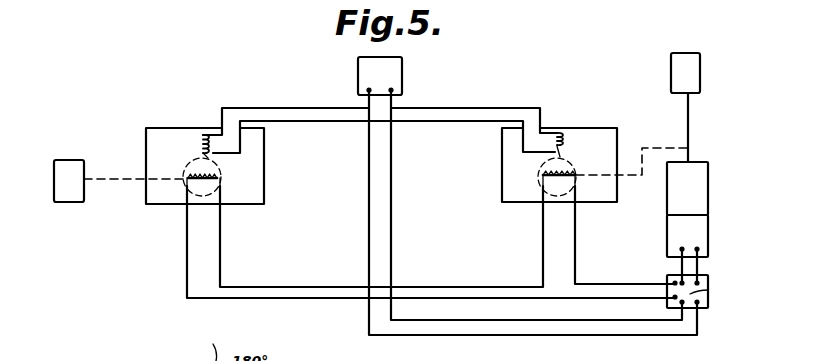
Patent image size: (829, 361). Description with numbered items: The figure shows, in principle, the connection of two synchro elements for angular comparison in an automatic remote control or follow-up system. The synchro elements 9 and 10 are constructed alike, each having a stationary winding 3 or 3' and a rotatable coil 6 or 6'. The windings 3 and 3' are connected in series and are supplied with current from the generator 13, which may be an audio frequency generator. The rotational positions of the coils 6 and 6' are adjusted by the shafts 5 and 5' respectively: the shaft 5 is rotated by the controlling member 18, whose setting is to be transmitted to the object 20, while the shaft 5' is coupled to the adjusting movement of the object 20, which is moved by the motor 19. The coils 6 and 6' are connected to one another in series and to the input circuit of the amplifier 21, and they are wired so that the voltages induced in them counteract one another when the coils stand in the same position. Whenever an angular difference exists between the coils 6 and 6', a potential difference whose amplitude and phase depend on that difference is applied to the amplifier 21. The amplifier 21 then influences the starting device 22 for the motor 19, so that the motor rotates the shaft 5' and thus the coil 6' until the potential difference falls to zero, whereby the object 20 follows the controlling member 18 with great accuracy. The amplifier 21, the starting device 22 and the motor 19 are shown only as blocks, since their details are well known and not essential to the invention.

The winding 3 is at (186, 152).
The winding 3' is at (581, 151).
The shaft 5 is at (136, 159).
The shaft 5' is at (632, 145).
The winding 6 is at (218, 177).
The winding 6' is at (541, 177).
The synchro element 9 is at (157, 136).
The synchro element 10 is at (605, 128).
The generator 13 is at (380, 76).
The controlling member 18 is at (68, 181).
The motor 19 is at (687, 188).
The object 20 is at (685, 73).
The amplifier 21 is at (708, 290).
The starting device 22 is at (687, 236).